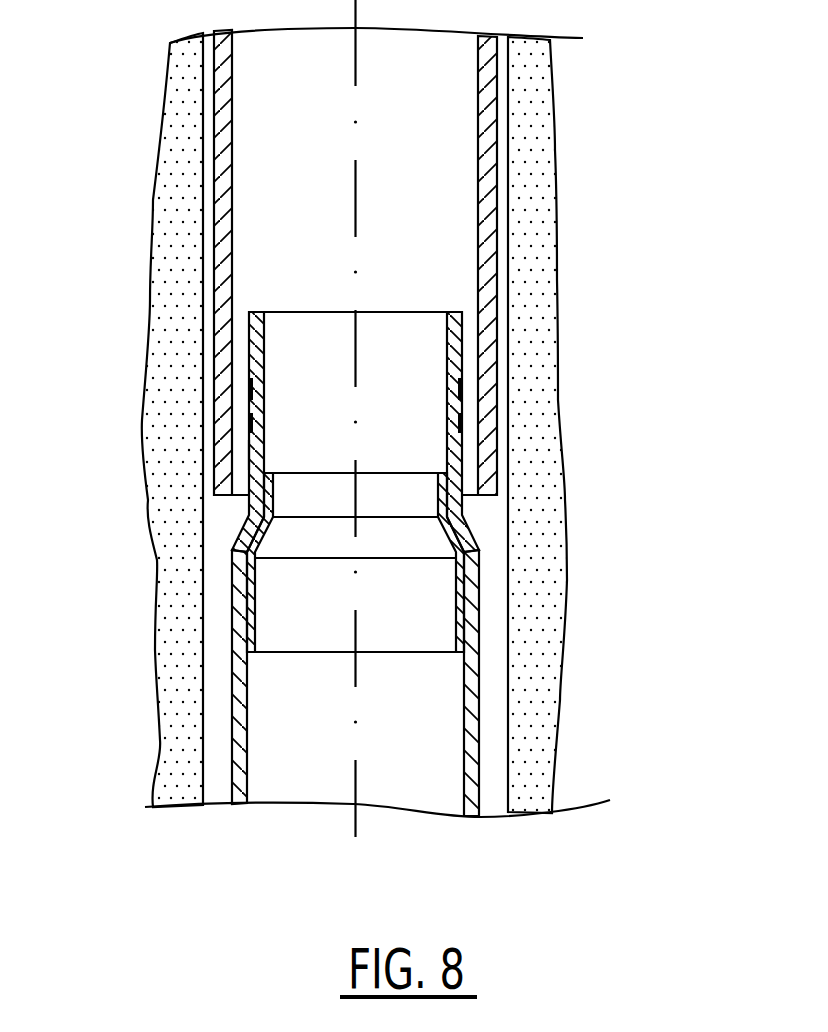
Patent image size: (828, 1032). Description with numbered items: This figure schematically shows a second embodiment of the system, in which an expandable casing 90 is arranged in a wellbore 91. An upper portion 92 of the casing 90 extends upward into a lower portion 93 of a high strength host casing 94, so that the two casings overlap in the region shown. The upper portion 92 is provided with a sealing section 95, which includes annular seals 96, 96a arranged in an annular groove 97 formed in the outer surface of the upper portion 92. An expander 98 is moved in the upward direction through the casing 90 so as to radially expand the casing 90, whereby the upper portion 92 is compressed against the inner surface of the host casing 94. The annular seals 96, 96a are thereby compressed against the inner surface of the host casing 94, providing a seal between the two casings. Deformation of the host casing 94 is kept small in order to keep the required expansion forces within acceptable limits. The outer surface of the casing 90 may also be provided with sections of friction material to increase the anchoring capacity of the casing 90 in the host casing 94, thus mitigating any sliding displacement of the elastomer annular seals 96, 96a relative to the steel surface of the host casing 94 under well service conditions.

The expandable casing 90 is at (478, 687).
The wellbore 91 is at (508, 743).
The upper portion of the casing 92 is at (458, 460).
The lower portion of the host casing 93 is at (497, 343).
The high strength host casing 94 is at (488, 227).
The sealing section 95 is at (222, 378).
The annular seal 96 is at (250, 392).
The annular seal 96a is at (250, 423).
The annular groove 97 is at (250, 443).
The expander 98 is at (280, 592).